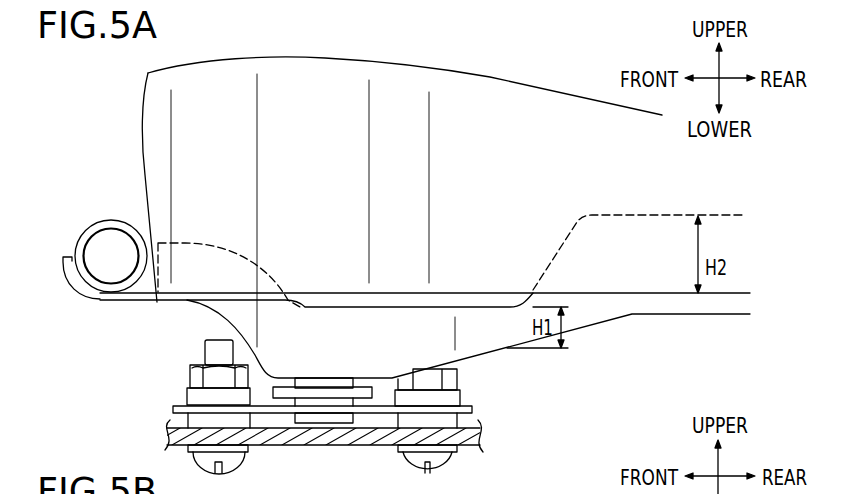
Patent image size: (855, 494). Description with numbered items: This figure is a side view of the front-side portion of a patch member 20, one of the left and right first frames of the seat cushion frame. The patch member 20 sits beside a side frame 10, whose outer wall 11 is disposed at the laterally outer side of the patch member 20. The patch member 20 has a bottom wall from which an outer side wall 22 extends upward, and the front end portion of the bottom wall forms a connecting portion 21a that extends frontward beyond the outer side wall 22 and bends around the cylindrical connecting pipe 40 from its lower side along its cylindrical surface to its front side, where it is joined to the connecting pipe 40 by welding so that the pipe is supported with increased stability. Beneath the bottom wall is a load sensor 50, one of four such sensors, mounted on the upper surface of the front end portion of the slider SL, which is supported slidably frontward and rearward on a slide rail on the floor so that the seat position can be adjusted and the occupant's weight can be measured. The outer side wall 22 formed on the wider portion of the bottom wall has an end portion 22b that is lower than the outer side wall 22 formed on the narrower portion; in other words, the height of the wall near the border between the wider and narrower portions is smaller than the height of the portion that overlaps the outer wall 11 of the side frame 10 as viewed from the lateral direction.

The side frame 10 is at (553, 91).
The outer wall 11 is at (497, 110).
The patch member 20 is at (629, 315).
The connecting portion 21a is at (94, 301).
The outer side wall 22 is at (586, 325).
The end portion of outer sidewall 22b is at (508, 313).
The connecting pipe 40 is at (104, 220).
The load sensor 50 is at (172, 406).
The slider SL is at (365, 440).